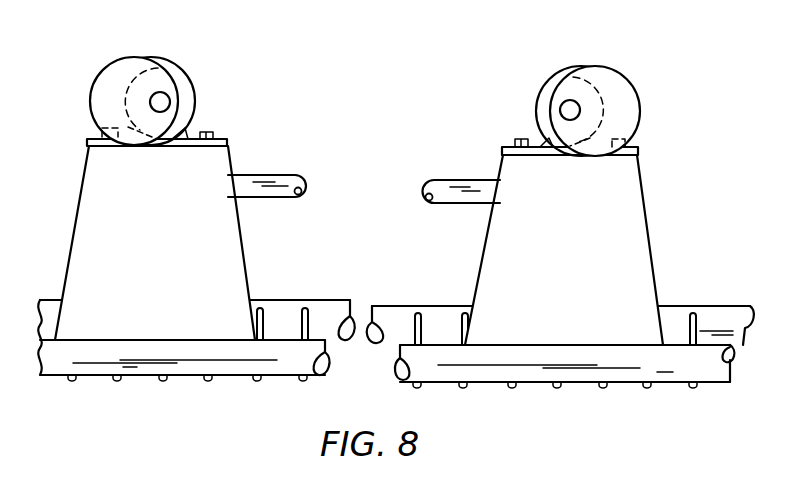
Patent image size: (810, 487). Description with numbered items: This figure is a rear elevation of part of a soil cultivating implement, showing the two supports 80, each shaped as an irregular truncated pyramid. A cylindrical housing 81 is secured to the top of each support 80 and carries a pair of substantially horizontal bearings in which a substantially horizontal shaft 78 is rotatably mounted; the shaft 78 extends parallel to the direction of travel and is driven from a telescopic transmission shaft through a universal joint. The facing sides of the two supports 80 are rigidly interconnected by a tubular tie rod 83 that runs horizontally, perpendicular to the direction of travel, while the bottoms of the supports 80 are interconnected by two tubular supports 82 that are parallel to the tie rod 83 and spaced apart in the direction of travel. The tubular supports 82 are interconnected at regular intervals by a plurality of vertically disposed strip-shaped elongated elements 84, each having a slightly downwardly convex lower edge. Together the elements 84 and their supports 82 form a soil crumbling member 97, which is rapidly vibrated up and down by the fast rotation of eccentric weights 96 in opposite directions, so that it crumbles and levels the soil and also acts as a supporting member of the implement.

The eccentric weights 96 is at (135, 48).
The cylindrical housing 81 is at (177, 78).
The substantially horizontal shaft 78 is at (163, 103).
The support 80 is at (222, 165).
The tubular tie rod 83 is at (268, 196).
The strip-shaped elongated elements 84 is at (165, 313).
The tubular supports 82 is at (386, 313).
The soil crumbling member 97 is at (227, 378).